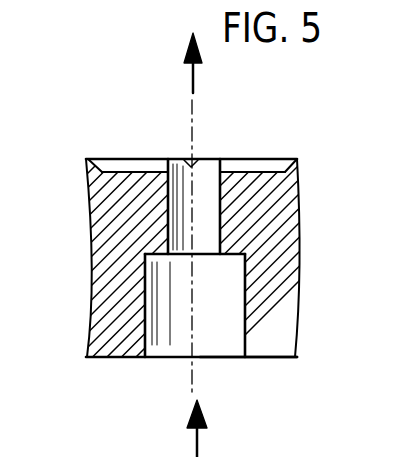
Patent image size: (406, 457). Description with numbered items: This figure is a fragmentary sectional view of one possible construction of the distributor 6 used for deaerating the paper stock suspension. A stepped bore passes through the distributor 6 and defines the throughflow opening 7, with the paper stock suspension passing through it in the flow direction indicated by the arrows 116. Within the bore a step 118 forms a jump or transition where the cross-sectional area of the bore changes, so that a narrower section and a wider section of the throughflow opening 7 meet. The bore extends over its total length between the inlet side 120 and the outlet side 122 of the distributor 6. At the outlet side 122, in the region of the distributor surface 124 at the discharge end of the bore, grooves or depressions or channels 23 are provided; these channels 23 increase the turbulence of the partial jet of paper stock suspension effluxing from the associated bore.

The distributor 6 is at (272, 210).
The throughflow opening 7 is at (215, 323).
The groove 23 is at (238, 157).
The flow direction arrow 116 is at (191, 79).
The step 118 is at (150, 253).
The inlet side 120 is at (272, 357).
The outlet side 122 is at (92, 156).
The distributor surface 124 is at (268, 157).